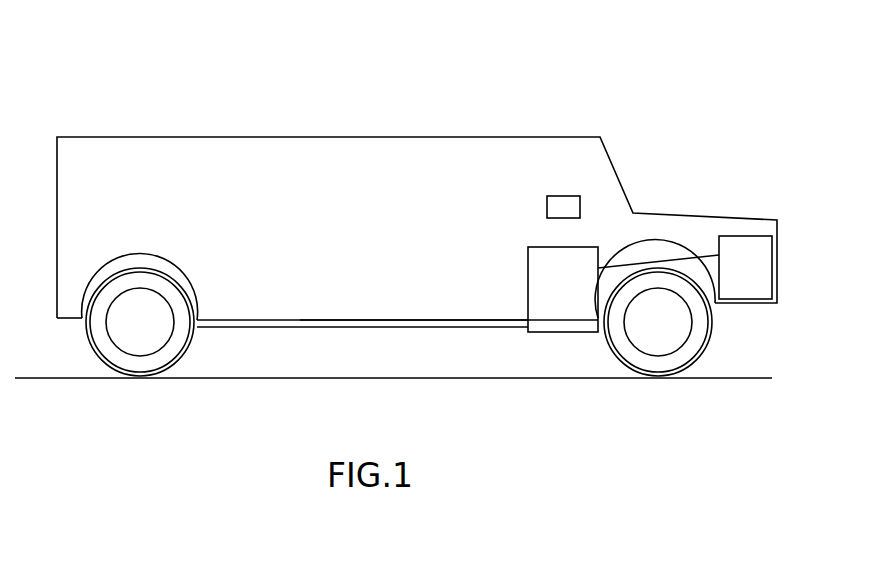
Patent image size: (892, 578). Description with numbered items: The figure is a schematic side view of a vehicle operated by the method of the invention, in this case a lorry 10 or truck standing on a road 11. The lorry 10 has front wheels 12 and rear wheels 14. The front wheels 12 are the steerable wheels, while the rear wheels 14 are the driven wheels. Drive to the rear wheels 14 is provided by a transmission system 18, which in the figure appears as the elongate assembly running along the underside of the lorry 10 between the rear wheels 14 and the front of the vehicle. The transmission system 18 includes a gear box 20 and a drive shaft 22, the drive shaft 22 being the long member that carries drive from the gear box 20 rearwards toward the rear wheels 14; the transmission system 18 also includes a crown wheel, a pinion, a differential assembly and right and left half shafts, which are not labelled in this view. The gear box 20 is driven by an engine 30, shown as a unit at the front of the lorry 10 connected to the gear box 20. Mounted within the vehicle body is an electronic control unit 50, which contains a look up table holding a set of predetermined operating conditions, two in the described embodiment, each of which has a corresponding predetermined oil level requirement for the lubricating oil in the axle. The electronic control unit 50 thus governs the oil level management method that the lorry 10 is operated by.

The lorry 10 is at (462, 124).
The road 11 is at (331, 414).
The front wheels 12 is at (642, 339).
The rear wheels 14 is at (124, 339).
The transmission system 18 is at (395, 325).
The gear box 20 is at (544, 295).
The drive shaft 22 is at (275, 327).
The engine 30 is at (731, 286).
The electronic control unit 50 is at (573, 207).